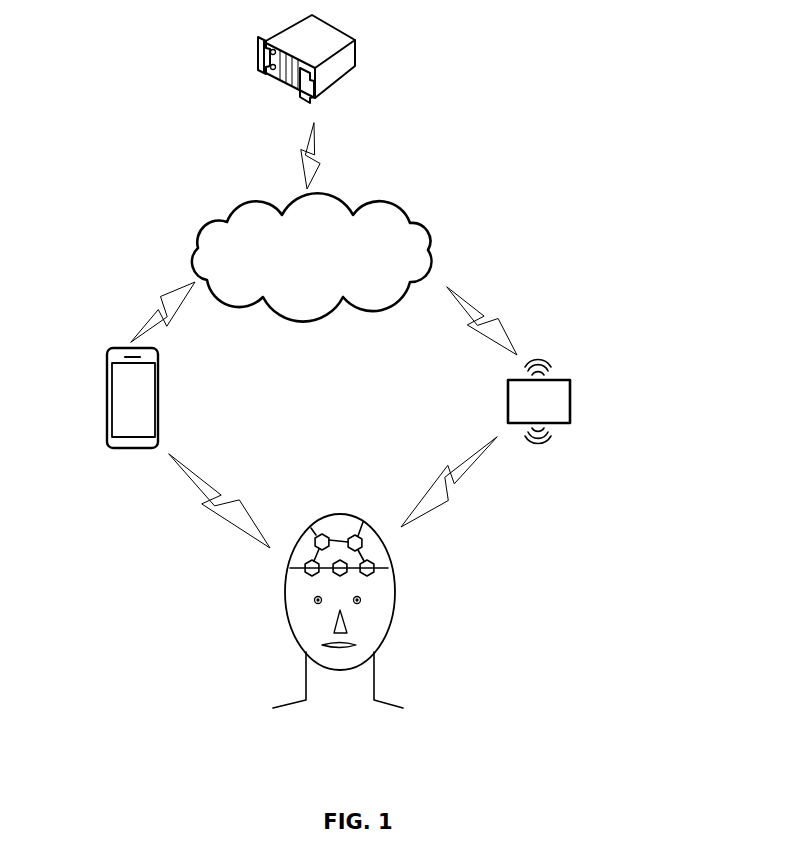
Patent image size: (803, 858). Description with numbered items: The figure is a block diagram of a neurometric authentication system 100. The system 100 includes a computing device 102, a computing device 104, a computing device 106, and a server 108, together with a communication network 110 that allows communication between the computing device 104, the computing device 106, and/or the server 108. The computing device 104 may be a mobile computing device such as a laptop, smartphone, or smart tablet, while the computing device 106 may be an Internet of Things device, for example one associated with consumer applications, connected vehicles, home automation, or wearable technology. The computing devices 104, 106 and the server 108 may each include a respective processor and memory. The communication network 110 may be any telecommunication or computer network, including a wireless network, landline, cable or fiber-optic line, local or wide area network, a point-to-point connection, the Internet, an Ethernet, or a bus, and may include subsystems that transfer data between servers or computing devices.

The neurometric authentication system 100 is at (585, 60).
The computing device 102 is at (338, 513).
The computing device 104 is at (107, 357).
The computing device 106 is at (540, 363).
The server 108 is at (260, 59).
The communication network 110 is at (301, 272).